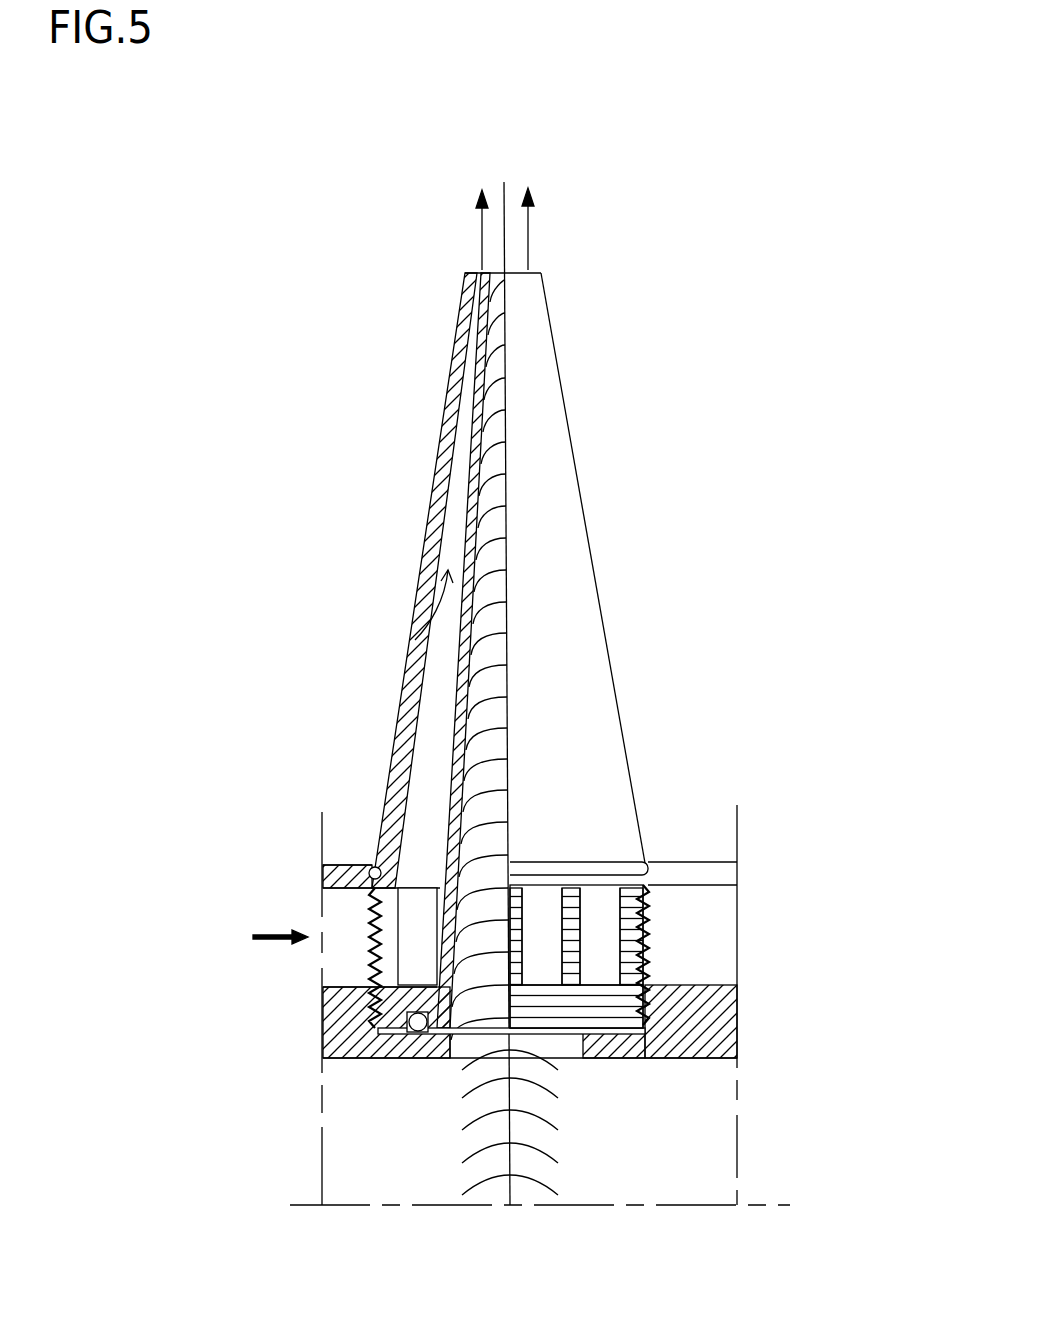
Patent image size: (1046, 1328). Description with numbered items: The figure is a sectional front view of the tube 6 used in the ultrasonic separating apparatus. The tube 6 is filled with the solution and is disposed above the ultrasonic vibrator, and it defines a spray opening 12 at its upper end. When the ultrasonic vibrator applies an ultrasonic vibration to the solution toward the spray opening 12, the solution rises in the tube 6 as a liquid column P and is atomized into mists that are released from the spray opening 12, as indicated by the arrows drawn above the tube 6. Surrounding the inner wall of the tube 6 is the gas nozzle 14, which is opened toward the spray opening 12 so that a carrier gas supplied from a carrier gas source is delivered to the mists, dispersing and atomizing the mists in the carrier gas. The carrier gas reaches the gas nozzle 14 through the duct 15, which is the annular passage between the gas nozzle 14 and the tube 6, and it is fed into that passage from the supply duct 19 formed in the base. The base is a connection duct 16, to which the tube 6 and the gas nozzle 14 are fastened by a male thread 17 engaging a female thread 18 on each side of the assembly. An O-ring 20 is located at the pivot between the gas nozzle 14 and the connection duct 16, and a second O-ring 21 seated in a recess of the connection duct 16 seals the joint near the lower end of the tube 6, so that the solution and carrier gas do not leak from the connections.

The tube 6 is at (600, 427).
The liquid column P is at (490, 460).
The spray opening 12 is at (497, 265).
The gas nozzle 14 is at (473, 266).
The duct 15 is at (412, 628).
The connection duct 16 is at (337, 1063).
The male thread 17 is at (370, 915).
The female thread 18 is at (363, 967).
The supply duct 19 is at (335, 951).
The O-ring 20 is at (367, 867).
The O-ring 21 is at (419, 1032).